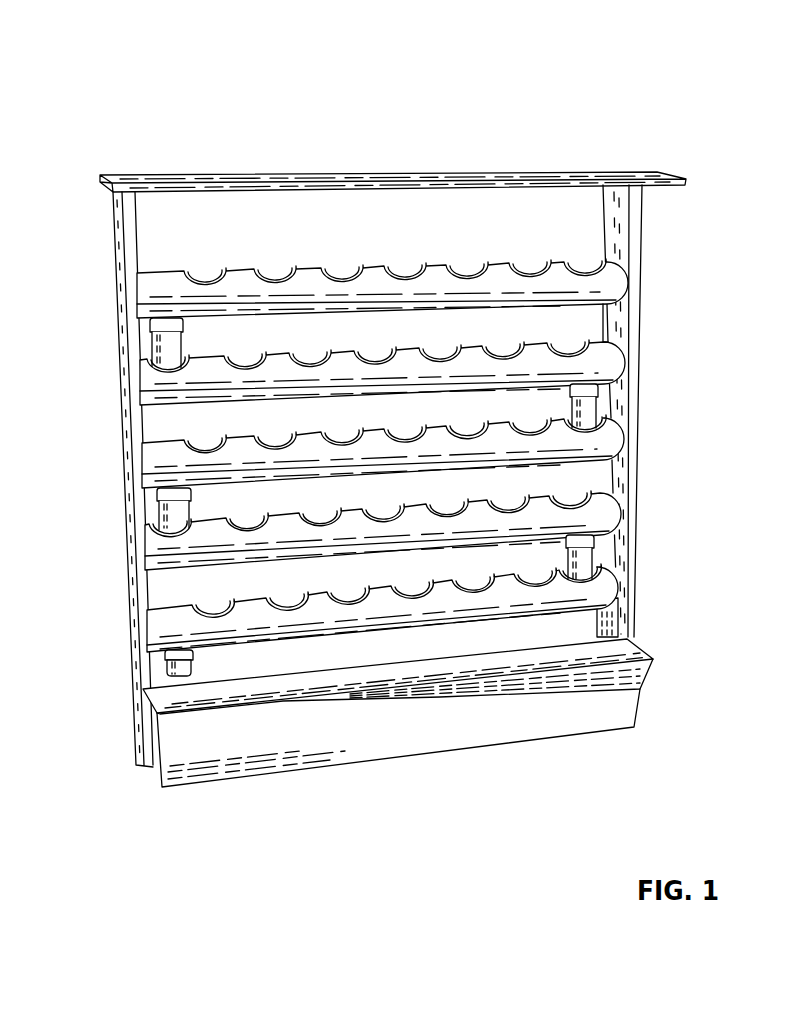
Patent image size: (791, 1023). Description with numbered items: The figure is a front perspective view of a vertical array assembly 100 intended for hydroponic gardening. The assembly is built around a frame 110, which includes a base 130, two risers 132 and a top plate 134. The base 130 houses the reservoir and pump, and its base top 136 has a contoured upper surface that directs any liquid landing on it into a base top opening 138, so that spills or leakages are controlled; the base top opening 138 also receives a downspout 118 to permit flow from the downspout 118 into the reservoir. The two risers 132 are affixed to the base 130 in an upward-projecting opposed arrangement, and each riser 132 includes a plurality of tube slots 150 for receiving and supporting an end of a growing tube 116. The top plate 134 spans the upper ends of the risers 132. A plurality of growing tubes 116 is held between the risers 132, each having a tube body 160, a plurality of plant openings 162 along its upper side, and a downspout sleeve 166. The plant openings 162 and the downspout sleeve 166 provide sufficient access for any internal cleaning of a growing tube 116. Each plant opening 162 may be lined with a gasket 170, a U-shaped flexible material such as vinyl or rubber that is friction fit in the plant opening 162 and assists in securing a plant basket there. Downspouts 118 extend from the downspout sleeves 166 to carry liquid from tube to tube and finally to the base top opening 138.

The vertical array assembly 100 is at (382, 400).
The frame 110 is at (382, 431).
The growing tube 116 is at (323, 196).
The downspout 118 is at (100, 316).
The base 130 is at (445, 676).
The riser 132 is at (640, 343).
The top plate 134 is at (507, 174).
The base top 136 is at (628, 643).
The base top opening 138 is at (157, 665).
The tube slot 150 is at (606, 340).
The tube body 160 is at (323, 196).
The plant opening 162 is at (203, 278).
The downspout sleeve 166 is at (155, 327).
The gasket 170 is at (308, 266).